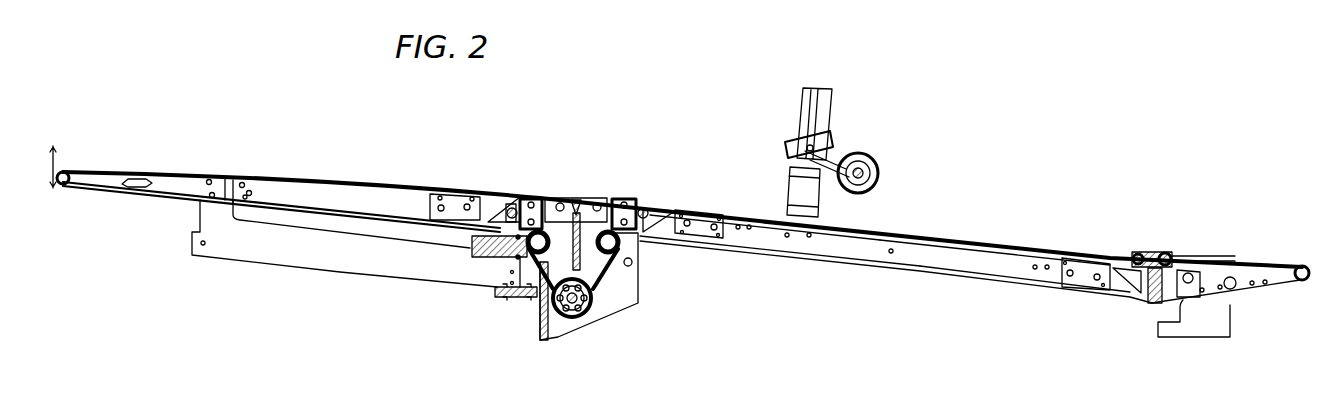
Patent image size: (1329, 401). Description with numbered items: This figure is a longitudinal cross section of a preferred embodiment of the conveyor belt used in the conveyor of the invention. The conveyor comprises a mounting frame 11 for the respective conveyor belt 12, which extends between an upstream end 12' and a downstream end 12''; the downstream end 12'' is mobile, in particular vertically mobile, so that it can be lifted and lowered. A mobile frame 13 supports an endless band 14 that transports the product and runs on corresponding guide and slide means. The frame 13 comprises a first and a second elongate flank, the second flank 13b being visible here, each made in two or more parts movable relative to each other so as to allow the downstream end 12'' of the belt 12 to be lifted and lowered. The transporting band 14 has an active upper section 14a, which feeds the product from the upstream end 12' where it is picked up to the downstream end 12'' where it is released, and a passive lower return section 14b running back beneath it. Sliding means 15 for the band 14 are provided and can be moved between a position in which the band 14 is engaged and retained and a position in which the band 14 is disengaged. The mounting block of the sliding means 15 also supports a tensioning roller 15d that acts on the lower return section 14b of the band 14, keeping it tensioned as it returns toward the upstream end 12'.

The mounting frame 11 is at (650, 283).
The conveyor belt 12 is at (921, 212).
The upstream end 12' is at (1220, 255).
The downstream end 12'' is at (298, 178).
The mobile frame 13 is at (742, 262).
The second elongate flank 13b is at (988, 268).
The endless band 14 is at (995, 240).
The active upper section 14a is at (903, 232).
The passive lower return section 14b is at (862, 266).
The sliding means 15 is at (537, 190).
The tensioning roller 15d is at (638, 197).